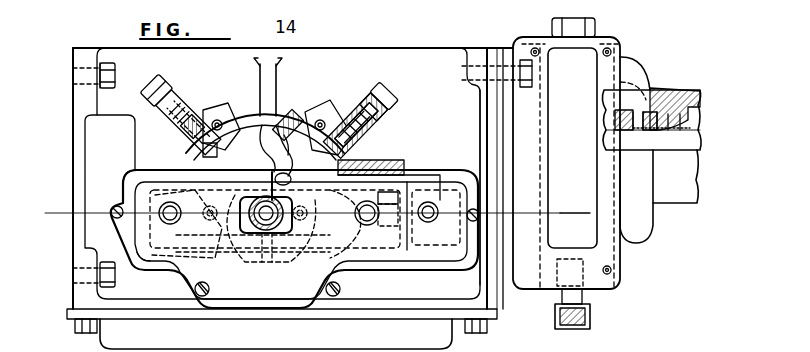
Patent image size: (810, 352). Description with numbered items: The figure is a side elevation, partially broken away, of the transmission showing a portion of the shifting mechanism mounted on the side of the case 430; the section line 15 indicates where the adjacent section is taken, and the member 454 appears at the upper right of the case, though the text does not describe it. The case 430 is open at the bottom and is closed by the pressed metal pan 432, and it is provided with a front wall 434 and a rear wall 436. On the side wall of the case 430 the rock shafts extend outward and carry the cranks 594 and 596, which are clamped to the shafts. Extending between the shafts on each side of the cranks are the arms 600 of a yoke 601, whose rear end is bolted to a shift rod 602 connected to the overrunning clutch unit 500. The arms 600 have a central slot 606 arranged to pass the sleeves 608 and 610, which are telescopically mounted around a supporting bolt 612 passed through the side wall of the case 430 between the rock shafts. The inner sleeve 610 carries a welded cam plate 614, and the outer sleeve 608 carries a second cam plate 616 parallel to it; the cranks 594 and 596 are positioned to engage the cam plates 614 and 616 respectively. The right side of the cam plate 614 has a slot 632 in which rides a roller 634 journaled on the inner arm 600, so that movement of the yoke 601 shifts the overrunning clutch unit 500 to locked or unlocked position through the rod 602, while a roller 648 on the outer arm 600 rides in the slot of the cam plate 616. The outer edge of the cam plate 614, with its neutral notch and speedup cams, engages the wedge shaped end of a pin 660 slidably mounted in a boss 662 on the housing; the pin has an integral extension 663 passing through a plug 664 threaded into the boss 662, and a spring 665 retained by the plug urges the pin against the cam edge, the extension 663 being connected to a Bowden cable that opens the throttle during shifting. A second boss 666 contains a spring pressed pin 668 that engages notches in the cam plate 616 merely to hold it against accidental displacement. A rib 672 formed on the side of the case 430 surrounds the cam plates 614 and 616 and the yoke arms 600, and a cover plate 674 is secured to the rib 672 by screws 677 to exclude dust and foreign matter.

The section line 15- 15 is at (52, 236).
The transmission case 430 is at (418, 30).
The pressed metal pan 432 is at (290, 346).
The front wall 434 is at (73, 72).
The rear wall 436 is at (480, 109).
The mounting flange 454 is at (497, 48).
The overrunning clutch unit 500 is at (657, 62).
The crank 594 is at (188, 158).
The crank 596 is at (352, 158).
The yoke arms 600 is at (140, 184).
The yoke 601 is at (437, 176).
The shift rod 602 is at (588, 213).
The central slot 606 is at (288, 178).
The outer sleeve 608 is at (240, 202).
The inner sleeve 610 is at (263, 180).
The supporting bolt 612 is at (557, 332).
The cam plate 614 is at (281, 114).
The second cam plate 616 is at (266, 100).
The slot 632 is at (289, 150).
The roller 634 is at (337, 229).
The roller 648 is at (240, 226).
The pin 660 is at (347, 116).
The boss 662 is at (351, 98).
The extension 663 is at (384, 101).
The plug 664 is at (384, 112).
The spring 665 is at (382, 134).
The second boss 666 is at (192, 110).
The spring pressed pin 668 is at (212, 123).
The rib 672 is at (128, 172).
The cover plate 674 is at (170, 264).
The screws 677 is at (341, 288).